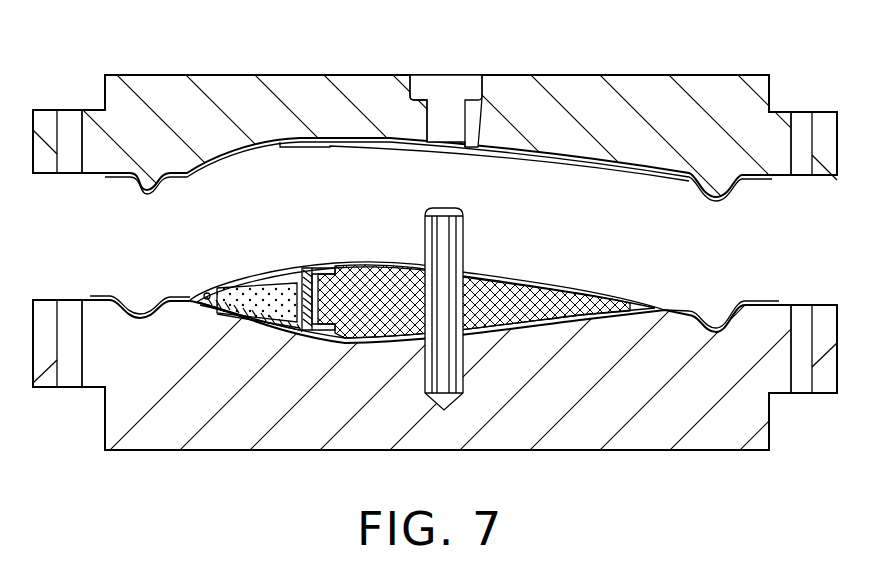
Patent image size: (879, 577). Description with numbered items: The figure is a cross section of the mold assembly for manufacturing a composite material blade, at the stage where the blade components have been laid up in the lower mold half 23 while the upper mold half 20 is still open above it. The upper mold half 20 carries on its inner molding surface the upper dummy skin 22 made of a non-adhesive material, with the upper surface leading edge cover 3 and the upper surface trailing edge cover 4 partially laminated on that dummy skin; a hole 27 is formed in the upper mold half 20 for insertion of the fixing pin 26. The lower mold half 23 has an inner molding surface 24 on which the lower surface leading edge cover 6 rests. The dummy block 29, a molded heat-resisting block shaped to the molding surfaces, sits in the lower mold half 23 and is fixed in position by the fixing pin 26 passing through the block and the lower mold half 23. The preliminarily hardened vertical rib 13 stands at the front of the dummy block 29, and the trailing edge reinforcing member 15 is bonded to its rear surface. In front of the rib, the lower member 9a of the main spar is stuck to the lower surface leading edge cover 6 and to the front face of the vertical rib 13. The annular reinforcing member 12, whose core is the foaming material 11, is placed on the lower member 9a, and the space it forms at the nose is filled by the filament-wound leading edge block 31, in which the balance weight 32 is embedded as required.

The upper mold half 20 is at (718, 85).
The hole 27 is at (445, 108).
The upper surface leading edge cover 3 is at (250, 146).
The upper dummy skin 22 is at (443, 150).
The upper surface trailing edge cover 4 is at (742, 184).
The lower mold half 23 is at (664, 452).
The leading edge block 31 is at (197, 298).
The balance weight 32 is at (207, 292).
The annular reinforcing member 12 is at (243, 285).
The vertical rib 13 is at (322, 266).
The fixing pin 26 is at (465, 220).
The dummy block 29 is at (556, 282).
The trailing edge reinforcing member 15 is at (640, 300).
The inner molding surface 24 is at (626, 320).
The lower surface leading edge cover 6 is at (200, 323).
The lower member of the main spar 9a is at (230, 330).
The foaming material 11 is at (267, 337).